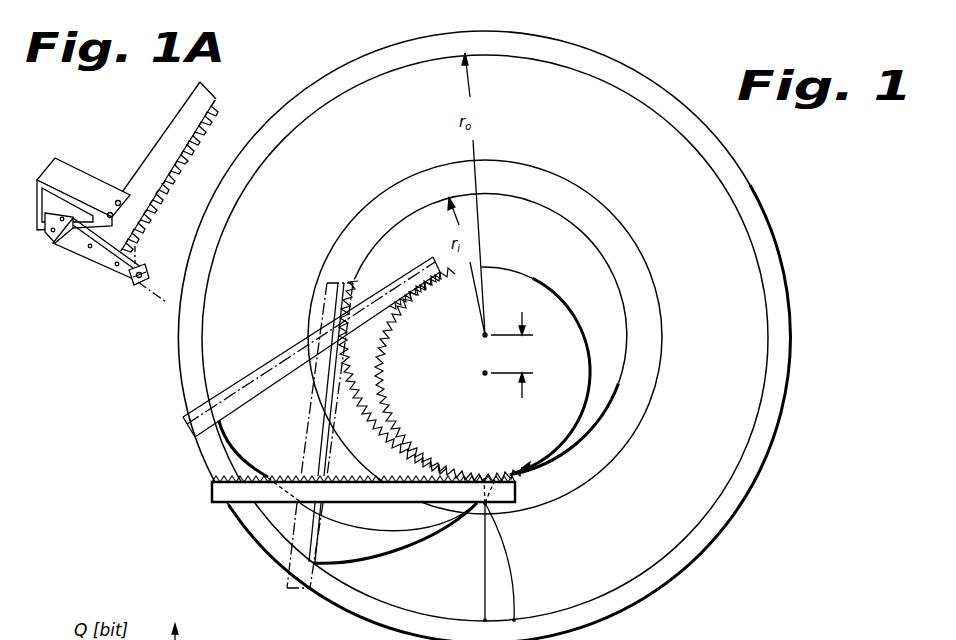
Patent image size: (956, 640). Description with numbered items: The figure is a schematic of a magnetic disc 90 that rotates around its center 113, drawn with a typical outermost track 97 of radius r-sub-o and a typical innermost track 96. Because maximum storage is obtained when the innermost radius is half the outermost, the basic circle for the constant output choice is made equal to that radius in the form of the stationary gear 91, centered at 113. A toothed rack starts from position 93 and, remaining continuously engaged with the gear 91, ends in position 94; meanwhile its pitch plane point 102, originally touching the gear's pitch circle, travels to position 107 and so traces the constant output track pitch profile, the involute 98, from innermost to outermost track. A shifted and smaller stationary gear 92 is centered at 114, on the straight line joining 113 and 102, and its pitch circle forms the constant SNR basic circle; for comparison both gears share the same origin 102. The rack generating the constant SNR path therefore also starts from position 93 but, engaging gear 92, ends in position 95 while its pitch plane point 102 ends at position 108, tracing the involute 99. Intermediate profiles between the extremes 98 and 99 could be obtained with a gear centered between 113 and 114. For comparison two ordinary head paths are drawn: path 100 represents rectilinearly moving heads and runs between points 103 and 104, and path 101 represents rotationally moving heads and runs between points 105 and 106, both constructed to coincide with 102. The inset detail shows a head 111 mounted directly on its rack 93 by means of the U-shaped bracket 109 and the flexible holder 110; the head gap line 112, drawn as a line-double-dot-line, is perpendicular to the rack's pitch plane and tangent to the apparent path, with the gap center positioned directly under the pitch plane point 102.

In FIG. 1, the magnetic disc 90 is at (788, 308).
In FIG. 1, the stationary gear 91 is at (558, 213).
In FIG. 1, the shifted smaller stationary gear 92 is at (547, 280).
In FIG. 1, the toothed rack 93 is at (214, 504).
In FIG. 1A, the toothed rack 93 is at (173, 118).
In FIG. 1, the rack end position 94 is at (348, 283).
In FIG. 1, the rack end position 95 is at (437, 256).
In FIG. 1, the typical innermost track 96 is at (339, 257).
In FIG. 1, the typical outermost track 97 is at (736, 234).
In FIG. 1, the constant output TPP involute 98 is at (357, 564).
In FIG. 1, the constant SNR TPP involute 99 is at (383, 530).
In FIG. 1, the rectilinear head path 100 is at (483, 583).
In FIG. 1, the rotational head path 101 is at (514, 582).
In FIG. 1, the pitch plane point 102 is at (493, 474).
In FIG. 1A, the pitch plane point 102 is at (145, 231).
In FIG. 1, the rectilinear path start point 103 is at (485, 508).
In FIG. 1, the rectilinear path end point 104 is at (485, 622).
In FIG. 1, the rotational path start point 105 is at (499, 511).
In FIG. 1, the rotational path end point 106 is at (514, 622).
In FIG. 1, the pitch plane point end position 107 is at (312, 575).
In FIG. 1, the pitch plane point end position 108 is at (219, 425).
In FIG. 1A, the U-shaped bracket 109 is at (86, 155).
In FIG. 1A, the flexible holder 110 is at (92, 263).
In FIG. 1A, the head 111 is at (137, 286).
In FIG. 1A, the head gap line 112 is at (166, 303).
In FIG. 1, the disc center 113 is at (480, 335).
In FIG. 1, the gear center 114 is at (480, 372).